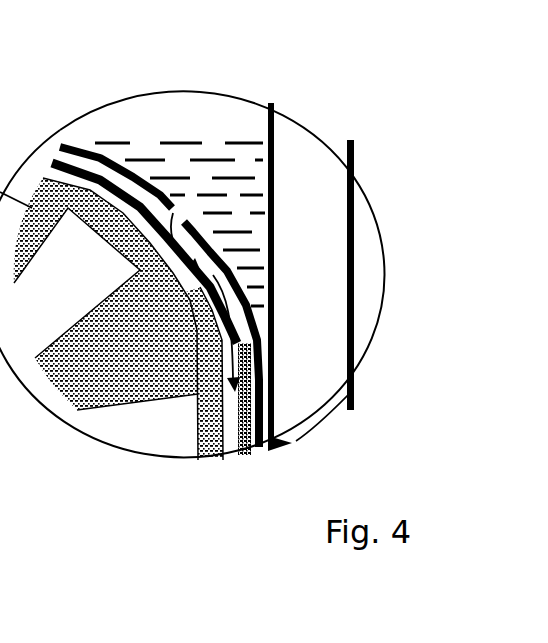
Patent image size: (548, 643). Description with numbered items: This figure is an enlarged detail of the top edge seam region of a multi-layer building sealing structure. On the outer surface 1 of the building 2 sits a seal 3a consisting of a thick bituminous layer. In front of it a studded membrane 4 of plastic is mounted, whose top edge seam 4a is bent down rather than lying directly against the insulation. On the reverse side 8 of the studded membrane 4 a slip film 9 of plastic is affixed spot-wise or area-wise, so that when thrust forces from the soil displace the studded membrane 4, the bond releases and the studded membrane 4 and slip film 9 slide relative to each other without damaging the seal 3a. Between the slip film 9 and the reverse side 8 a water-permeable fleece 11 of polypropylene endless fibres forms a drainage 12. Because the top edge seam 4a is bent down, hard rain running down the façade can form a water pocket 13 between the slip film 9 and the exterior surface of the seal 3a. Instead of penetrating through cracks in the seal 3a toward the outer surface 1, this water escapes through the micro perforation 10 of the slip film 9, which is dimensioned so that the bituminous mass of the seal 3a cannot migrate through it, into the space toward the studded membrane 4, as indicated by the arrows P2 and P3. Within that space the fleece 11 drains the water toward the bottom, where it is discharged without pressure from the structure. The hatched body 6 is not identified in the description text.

The outer surface 1 is at (333, 188).
The building 2 is at (379, 216).
The seal 3a is at (291, 135).
The studded membrane 4 is at (202, 458).
The top edge seam 4a is at (126, 100).
The rotor hub 6 is at (68, 400).
The reverse side 8 is at (83, 181).
The slip film 9 is at (288, 443).
The micro perforation 10 is at (121, 176).
The fleece 11 is at (97, 170).
The drainage 12 is at (233, 462).
The water pocket 13 is at (253, 163).
The arrow P2 is at (272, 216).
The arrow P3 is at (273, 257).